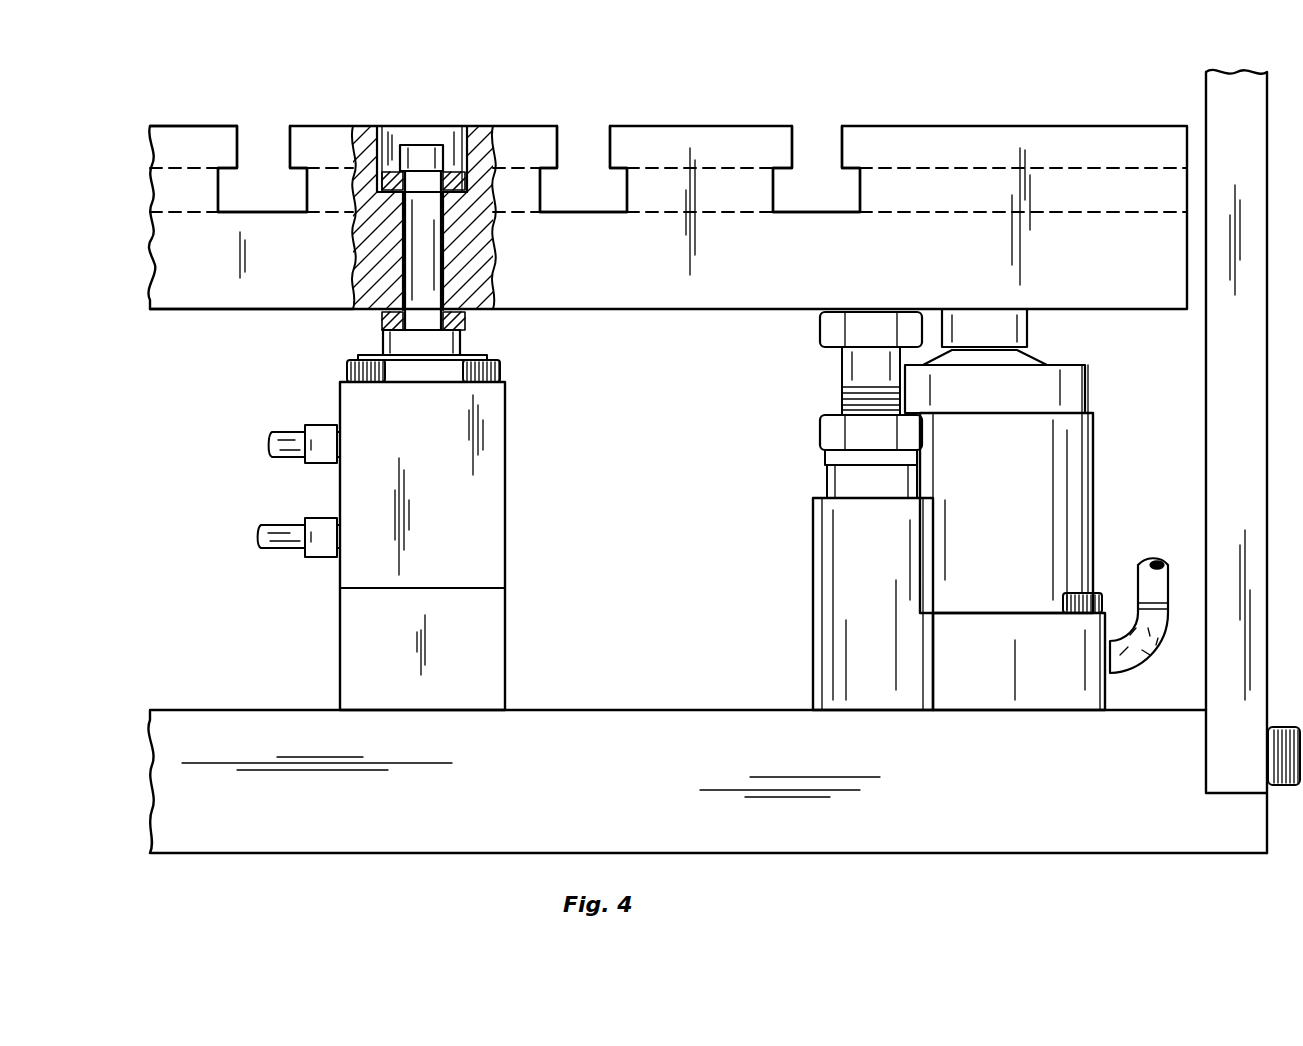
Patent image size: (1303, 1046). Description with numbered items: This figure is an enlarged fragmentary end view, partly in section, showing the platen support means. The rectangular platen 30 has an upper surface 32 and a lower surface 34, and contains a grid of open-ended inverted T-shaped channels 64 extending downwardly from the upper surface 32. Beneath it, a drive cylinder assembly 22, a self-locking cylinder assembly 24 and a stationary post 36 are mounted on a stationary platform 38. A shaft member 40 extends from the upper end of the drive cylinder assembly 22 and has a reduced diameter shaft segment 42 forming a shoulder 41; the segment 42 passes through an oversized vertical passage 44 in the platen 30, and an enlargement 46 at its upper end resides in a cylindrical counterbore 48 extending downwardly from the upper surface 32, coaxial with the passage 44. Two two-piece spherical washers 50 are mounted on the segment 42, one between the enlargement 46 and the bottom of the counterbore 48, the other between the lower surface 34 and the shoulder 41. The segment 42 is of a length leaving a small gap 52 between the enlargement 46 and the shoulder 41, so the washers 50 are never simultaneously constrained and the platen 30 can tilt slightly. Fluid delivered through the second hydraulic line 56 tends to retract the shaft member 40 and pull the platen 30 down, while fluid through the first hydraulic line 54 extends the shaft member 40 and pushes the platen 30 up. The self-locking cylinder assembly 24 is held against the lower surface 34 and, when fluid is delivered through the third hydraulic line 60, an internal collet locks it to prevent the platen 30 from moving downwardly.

The drive cylinder assembly 22 is at (509, 558).
The self-locking cylinder assembly 24 is at (1096, 533).
The platen 30 is at (177, 250).
The upper surface 32 is at (183, 126).
The lower surface 34 is at (232, 311).
The stationary post 36 is at (857, 612).
The stationary platform 38 is at (1067, 813).
The shaft member 40 is at (464, 344).
The shoulder 41 is at (466, 322).
The reduced diameter shaft segment 42 is at (420, 247).
The vertical passage 44 is at (450, 273).
The enlargement 46 is at (424, 147).
The cylindrical counterbore 48 is at (463, 137).
The two-piece spherical washer 50 is at (378, 183).
The gap 52 is at (446, 163).
The first hydraulic line 54 is at (271, 550).
The second hydraulic line 56 is at (286, 460).
The third hydraulic line 60 is at (1170, 662).
The inverted T-shaped channel 64 is at (238, 148).